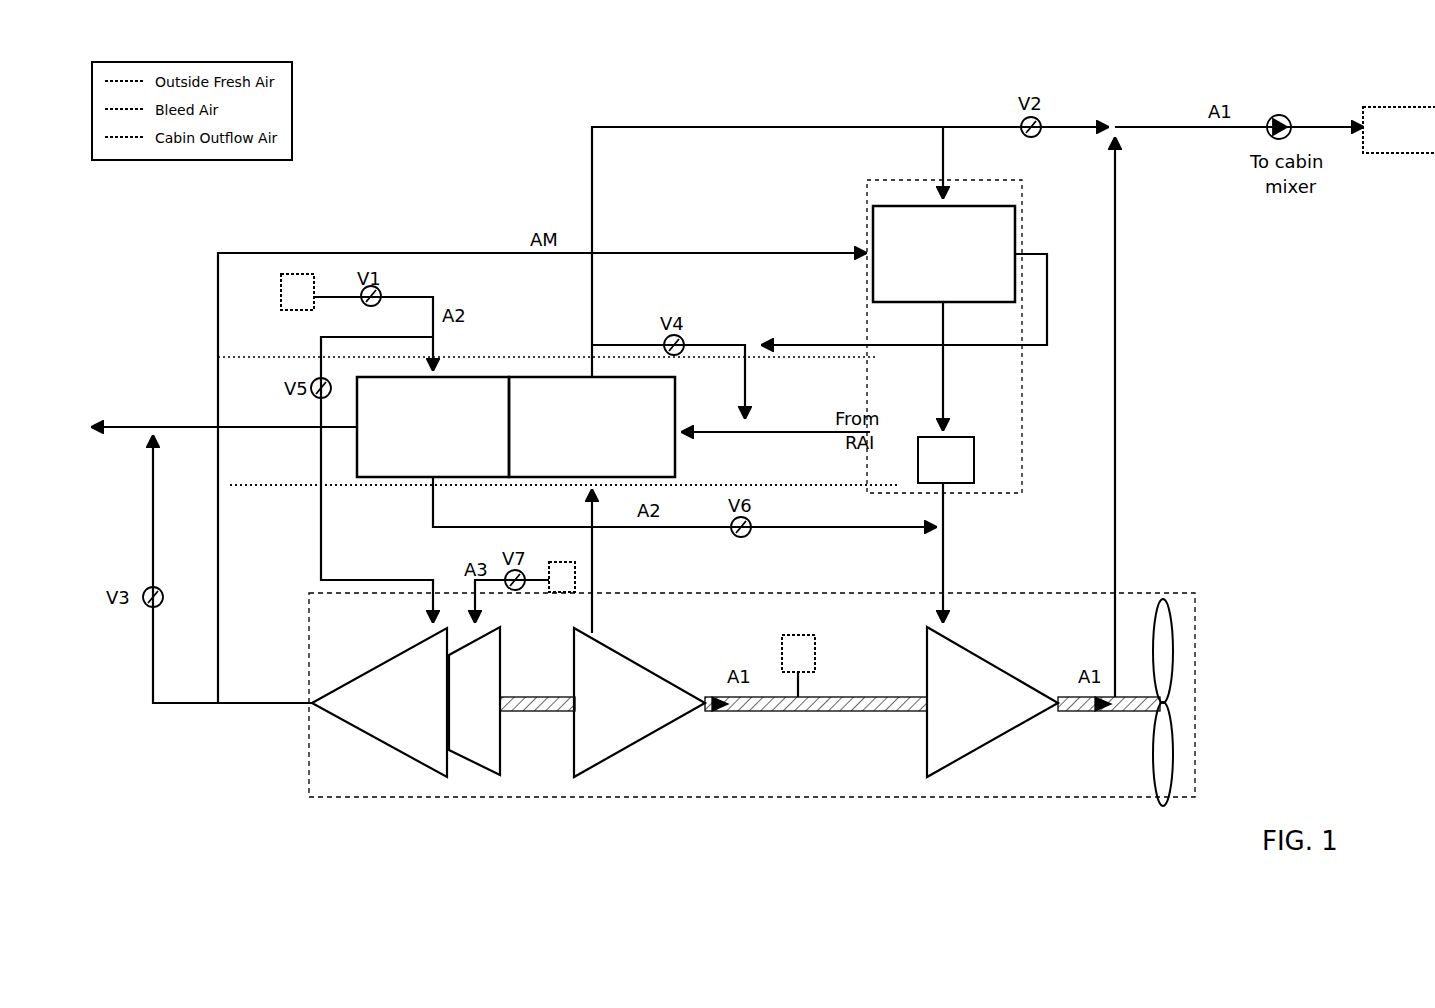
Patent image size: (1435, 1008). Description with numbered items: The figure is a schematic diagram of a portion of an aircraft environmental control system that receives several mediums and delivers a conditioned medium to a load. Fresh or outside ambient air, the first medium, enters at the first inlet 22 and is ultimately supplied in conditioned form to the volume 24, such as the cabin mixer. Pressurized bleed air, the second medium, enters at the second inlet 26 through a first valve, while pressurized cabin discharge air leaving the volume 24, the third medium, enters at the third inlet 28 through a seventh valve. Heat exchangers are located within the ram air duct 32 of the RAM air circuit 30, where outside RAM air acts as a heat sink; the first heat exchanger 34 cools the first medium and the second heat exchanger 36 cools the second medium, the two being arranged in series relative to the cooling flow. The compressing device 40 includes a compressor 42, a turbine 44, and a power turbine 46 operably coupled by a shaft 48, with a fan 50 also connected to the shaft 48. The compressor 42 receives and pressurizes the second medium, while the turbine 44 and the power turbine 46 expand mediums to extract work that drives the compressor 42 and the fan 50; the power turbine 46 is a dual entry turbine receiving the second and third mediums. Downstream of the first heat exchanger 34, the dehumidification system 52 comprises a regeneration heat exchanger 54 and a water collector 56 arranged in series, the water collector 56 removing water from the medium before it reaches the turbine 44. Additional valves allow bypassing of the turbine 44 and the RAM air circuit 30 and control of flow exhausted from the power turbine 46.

The first inlet 22 is at (808, 655).
The volume 24 is at (1399, 130).
The second inlet 26 is at (290, 282).
The third inlet 28 is at (560, 580).
The RAM air circuit 30 is at (828, 487).
The ram air duct 32 is at (295, 485).
The first heat exchanger 34 is at (592, 427).
The second heat exchanger 36 is at (433, 427).
The compressing device 40 is at (1085, 797).
The compressor 42 is at (655, 727).
The turbine 44 is at (957, 735).
The power turbine 46 is at (448, 777).
The shaft 48 is at (520, 705).
The fan 50 is at (1173, 635).
The dehumidification system 52 is at (1030, 380).
The regeneration heat exchanger 54 is at (944, 254).
The water collector 56 is at (963, 455).